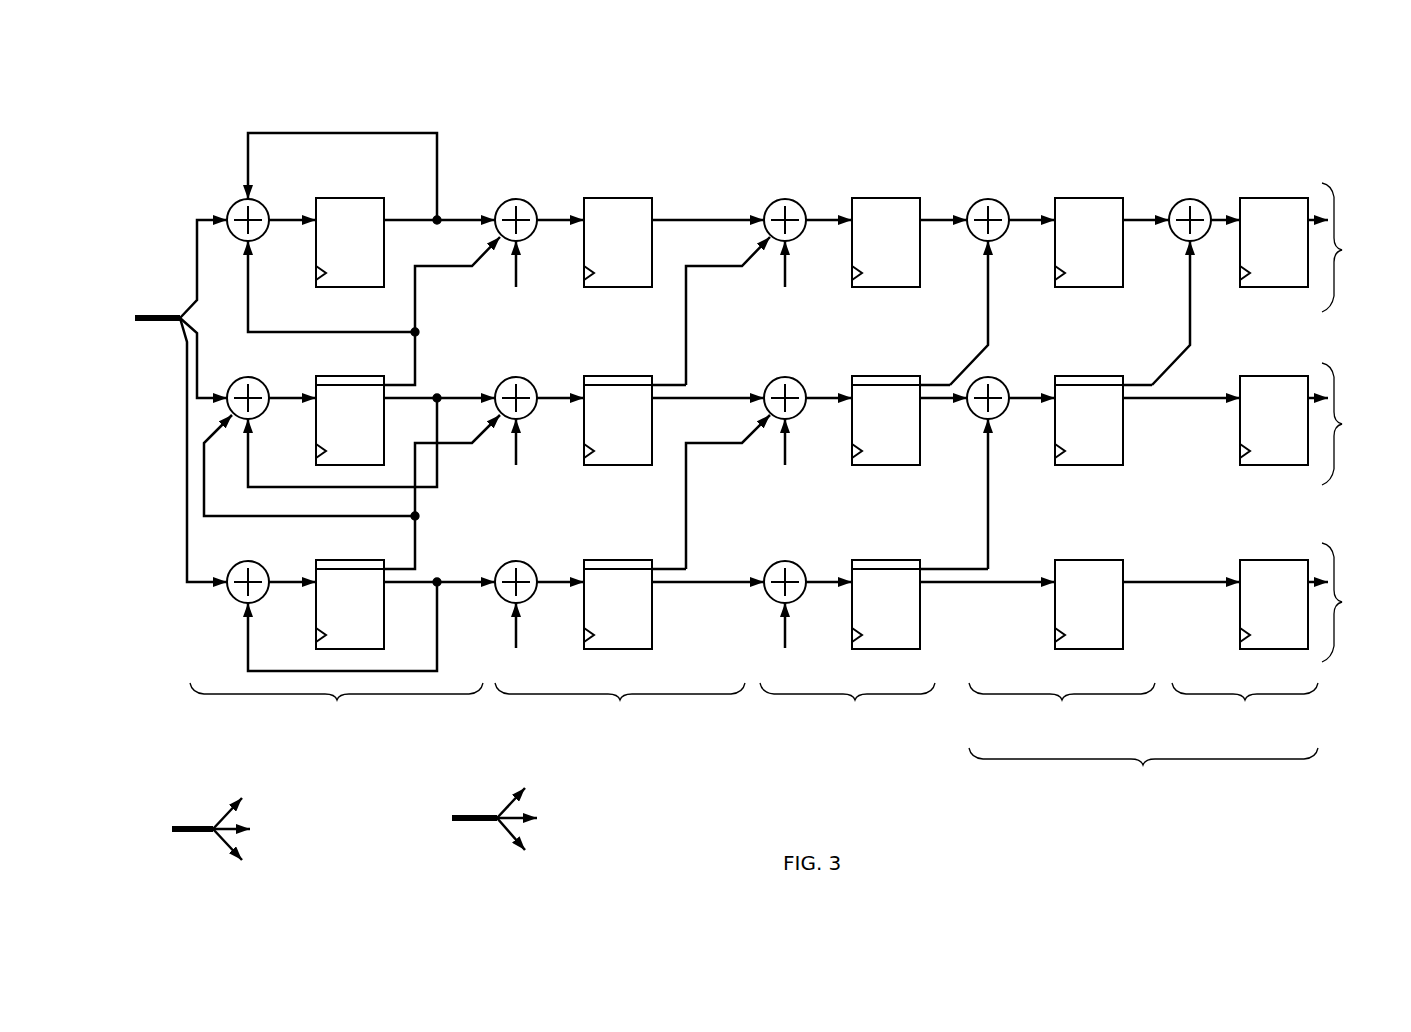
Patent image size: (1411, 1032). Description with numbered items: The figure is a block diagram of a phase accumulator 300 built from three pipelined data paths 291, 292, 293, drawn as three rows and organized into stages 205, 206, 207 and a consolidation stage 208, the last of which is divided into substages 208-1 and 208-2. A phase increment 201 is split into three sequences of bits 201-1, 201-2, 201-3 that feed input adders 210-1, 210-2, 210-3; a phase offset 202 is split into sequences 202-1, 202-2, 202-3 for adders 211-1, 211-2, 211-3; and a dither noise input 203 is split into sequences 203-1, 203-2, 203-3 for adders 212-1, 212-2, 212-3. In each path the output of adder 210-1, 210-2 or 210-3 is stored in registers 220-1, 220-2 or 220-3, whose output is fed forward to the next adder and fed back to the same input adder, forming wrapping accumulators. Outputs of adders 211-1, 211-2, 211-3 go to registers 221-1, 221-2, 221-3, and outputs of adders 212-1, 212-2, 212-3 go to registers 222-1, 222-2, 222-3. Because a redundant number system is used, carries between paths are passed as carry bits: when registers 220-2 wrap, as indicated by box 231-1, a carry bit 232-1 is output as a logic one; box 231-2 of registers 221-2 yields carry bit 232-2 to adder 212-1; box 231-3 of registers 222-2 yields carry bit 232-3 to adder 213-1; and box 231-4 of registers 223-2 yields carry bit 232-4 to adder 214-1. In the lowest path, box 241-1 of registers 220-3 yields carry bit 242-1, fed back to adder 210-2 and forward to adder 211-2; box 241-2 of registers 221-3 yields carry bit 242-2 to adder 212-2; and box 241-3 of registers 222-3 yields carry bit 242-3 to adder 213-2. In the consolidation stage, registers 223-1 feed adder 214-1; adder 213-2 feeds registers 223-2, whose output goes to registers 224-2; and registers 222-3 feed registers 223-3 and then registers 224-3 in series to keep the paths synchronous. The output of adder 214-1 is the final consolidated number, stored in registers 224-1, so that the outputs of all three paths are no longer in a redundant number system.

The phase accumulator 300 is at (1262, 98).
The phase increment 201 is at (183, 322).
The sequence of bits of phase increment 201-1 is at (197, 268).
The sequence of bits of phase increment 201-2 is at (197, 345).
The LSBs of phase increment 201-3 is at (200, 608).
The phase offset 202 is at (213, 832).
The sequence of bits of phase offset 202-1 is at (535, 300).
The sequence of bits of phase offset 202-2 is at (540, 488).
The LSBs of phase offset 202-3 is at (535, 660).
The dither noise input 203 is at (497, 822).
The sequence of bits of dither noise input 203-1 is at (810, 300).
The sequence of bits of dither noise input 203-2 is at (800, 478).
The LSBs of dither noise input 203-3 is at (800, 660).
The stage 205 is at (336, 703).
The stage 206 is at (620, 703).
The stage 207 is at (847, 703).
The consolidation stage 208 is at (1143, 769).
The substage 208-1 is at (1062, 703).
The substage 208-2 is at (1245, 702).
The adder 210-1 is at (264, 204).
The adder 210-2 is at (264, 382).
The adder 210-3 is at (264, 566).
The adder 211-1 is at (532, 204).
The adder 211-2 is at (532, 382).
The adder 211-3 is at (532, 566).
The adder 212-1 is at (801, 204).
The adder 212-2 is at (801, 382).
The adder 212-3 is at (801, 566).
The adder 213-1 is at (1004, 204).
The adder 213-2 is at (1004, 382).
The adder 214-1 is at (1206, 204).
The registers 220-1 is at (322, 253).
The registers 220-2 is at (322, 431).
The registers 220-3 is at (322, 615).
The registers 221-1 is at (590, 253).
The registers 221-2 is at (590, 431).
The registers 221-3 is at (590, 615).
The registers 222-1 is at (858, 253).
The registers 222-2 is at (858, 431).
The registers 222-3 is at (858, 615).
The registers 223-1 is at (1061, 253).
The registers 223-2 is at (1061, 431).
The registers 223-3 is at (1061, 615).
The registers 224-1 is at (1246, 253).
The registers 224-2 is at (1246, 431).
The registers 224-3 is at (1246, 615).
The box 231-1 is at (338, 378).
The box 231-2 is at (604, 378).
The box 231-3 is at (872, 378).
The box 231-4 is at (1078, 378).
The carry bit 232-1 is at (416, 350).
The carry bit 232-2 is at (687, 370).
The carry bit input 232-3 is at (989, 320).
The carry bit 232-4 is at (1191, 320).
The box 241-1 is at (340, 563).
The box 241-2 is at (604, 562).
The box 241-3 is at (872, 562).
The carry bit 242-1 is at (416, 545).
The carry bit 242-2 is at (687, 528).
The carry bit 242-3 is at (989, 542).
The pipelined data path 291 is at (1348, 247).
The pipelined data path 292 is at (1348, 424).
The pipelined data path 293 is at (1348, 602).